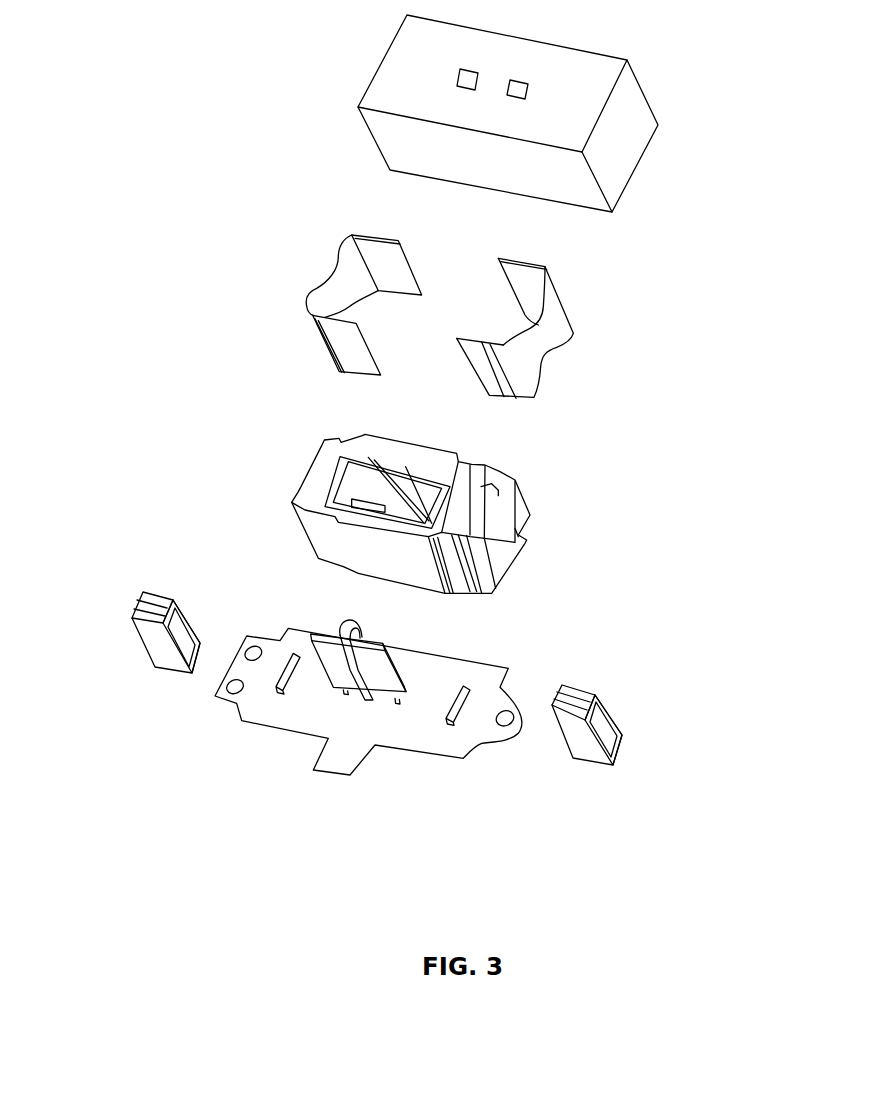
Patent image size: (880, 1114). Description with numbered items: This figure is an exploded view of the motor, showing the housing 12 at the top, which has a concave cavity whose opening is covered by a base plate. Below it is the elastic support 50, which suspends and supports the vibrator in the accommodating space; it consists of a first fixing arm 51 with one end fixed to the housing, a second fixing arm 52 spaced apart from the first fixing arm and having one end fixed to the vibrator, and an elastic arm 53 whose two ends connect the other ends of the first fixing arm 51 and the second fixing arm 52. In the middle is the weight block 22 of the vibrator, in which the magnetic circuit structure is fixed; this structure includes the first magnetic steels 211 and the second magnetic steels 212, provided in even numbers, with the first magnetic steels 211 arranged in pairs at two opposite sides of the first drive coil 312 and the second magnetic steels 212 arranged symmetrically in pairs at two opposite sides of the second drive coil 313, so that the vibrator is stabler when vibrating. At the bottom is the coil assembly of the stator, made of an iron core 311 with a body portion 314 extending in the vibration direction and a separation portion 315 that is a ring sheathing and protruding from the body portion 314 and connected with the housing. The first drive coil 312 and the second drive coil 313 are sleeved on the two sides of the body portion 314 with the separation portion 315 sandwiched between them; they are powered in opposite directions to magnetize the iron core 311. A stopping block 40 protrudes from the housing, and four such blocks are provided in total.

The housing 12 is at (628, 142).
The weight block 22 is at (417, 506).
The first magnetic steel 211 is at (325, 447).
The second magnetic steel 212 is at (380, 465).
The elastic support 50 is at (286, 296).
The first fixing arm 51 is at (343, 340).
The second fixing arm 52 is at (390, 253).
The elastic arm 53 is at (333, 273).
The iron core 311 is at (368, 761).
The first drive coil 312 is at (153, 618).
The second drive coil 313 is at (612, 727).
The body portion 314 is at (338, 678).
The separation portion 315 is at (373, 703).
The stopping block 40 is at (463, 723).